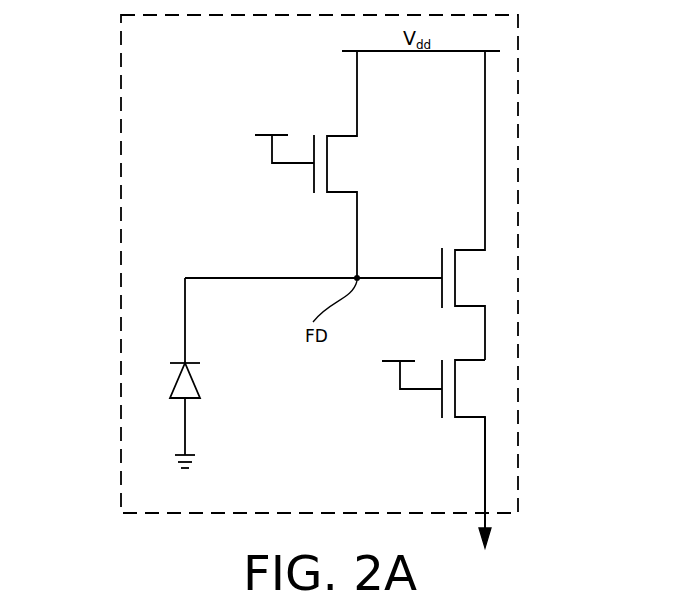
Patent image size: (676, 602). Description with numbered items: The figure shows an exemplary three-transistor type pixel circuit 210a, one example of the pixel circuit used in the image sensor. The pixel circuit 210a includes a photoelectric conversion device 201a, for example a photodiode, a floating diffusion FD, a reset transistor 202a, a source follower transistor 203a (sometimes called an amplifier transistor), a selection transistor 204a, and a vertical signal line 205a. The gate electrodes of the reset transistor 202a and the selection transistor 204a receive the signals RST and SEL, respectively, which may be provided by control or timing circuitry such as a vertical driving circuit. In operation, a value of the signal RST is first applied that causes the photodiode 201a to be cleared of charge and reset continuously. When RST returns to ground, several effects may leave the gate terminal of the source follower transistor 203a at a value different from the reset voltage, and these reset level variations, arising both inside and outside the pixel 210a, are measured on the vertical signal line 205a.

The pixel circuit 210a is at (178, 38).
The photoelectric conversion device 201a is at (173, 385).
The reset transistor 202a is at (330, 136).
The source follower transistor 203a is at (480, 249).
The selection transistor 204a is at (480, 359).
The vertical signal line 205a is at (486, 447).